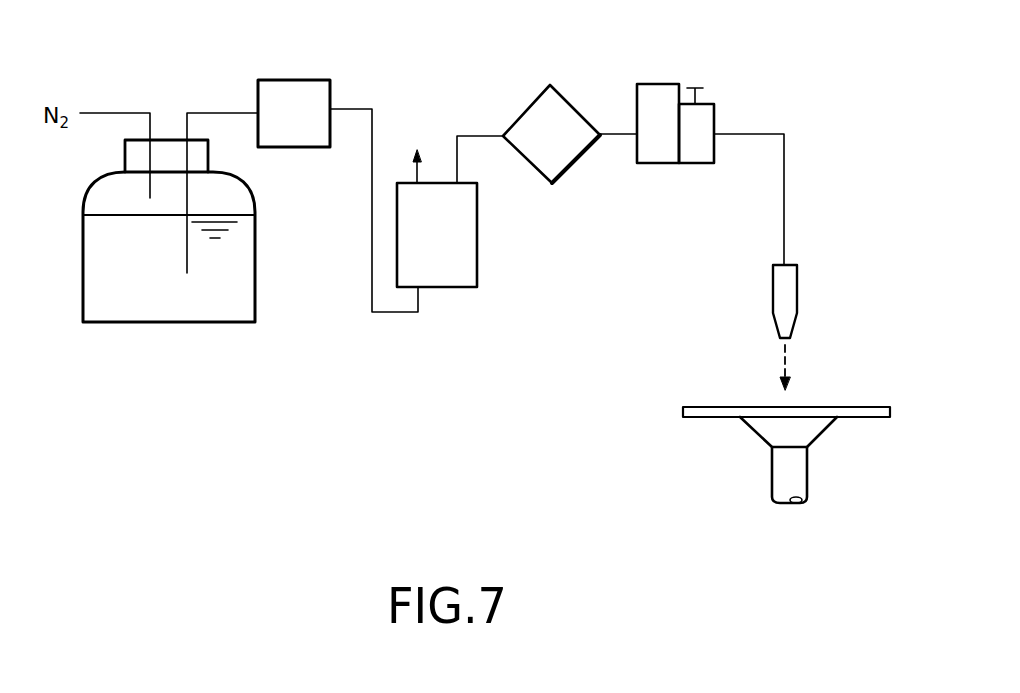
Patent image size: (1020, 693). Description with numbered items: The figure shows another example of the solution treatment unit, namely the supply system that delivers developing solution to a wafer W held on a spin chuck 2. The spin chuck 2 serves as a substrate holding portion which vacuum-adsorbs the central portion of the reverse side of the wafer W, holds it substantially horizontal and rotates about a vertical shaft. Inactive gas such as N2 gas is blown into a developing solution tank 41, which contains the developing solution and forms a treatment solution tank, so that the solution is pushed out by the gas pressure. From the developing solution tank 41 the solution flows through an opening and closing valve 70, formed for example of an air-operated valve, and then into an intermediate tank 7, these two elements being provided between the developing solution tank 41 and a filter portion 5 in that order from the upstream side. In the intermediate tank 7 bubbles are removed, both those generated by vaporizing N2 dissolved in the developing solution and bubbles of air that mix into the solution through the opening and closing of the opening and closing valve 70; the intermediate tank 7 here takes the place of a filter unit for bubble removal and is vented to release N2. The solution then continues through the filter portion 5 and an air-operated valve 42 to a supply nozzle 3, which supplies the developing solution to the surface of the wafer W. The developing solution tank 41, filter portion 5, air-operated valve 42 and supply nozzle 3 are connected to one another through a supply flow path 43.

The developing solution tank 41 is at (220, 313).
The opening and closing valve 70 is at (288, 80).
The supply flow path 43 is at (373, 268).
The intermediate tank 7 is at (450, 287).
The filter portion 5 is at (573, 107).
The air-operated valve 42 is at (710, 130).
The supply nozzle 3 is at (780, 290).
The wafer W is at (862, 407).
The spin chuck 2 is at (802, 430).